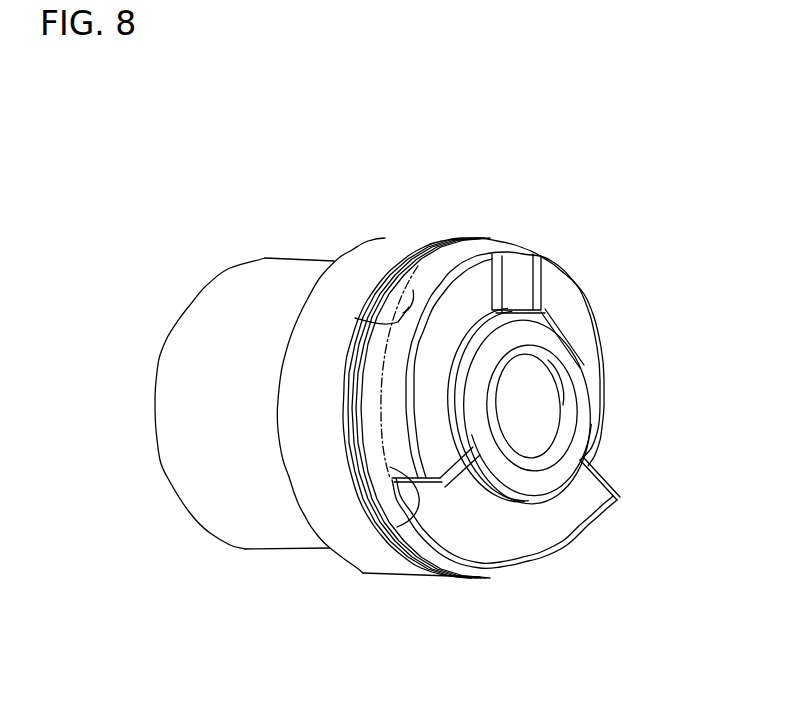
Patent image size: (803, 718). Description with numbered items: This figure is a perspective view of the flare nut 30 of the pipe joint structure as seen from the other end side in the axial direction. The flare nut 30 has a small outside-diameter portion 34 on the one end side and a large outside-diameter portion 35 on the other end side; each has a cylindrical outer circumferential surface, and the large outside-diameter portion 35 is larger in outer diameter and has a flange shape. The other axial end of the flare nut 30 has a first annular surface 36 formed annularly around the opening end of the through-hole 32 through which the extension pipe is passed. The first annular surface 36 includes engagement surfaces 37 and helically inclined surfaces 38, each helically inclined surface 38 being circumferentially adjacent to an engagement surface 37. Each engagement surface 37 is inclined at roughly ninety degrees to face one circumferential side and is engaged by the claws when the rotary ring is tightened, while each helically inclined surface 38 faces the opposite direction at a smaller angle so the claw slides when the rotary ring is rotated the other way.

The flare nut 30 is at (248, 232).
The through-hole 32 is at (520, 447).
The small outside-diameter portion 34 is at (293, 268).
The large outside-diameter portion 35 is at (403, 248).
The first annular surface 36 is at (601, 293).
The engagement surface 37 is at (520, 275).
The helically inclined surface 38 is at (452, 298).